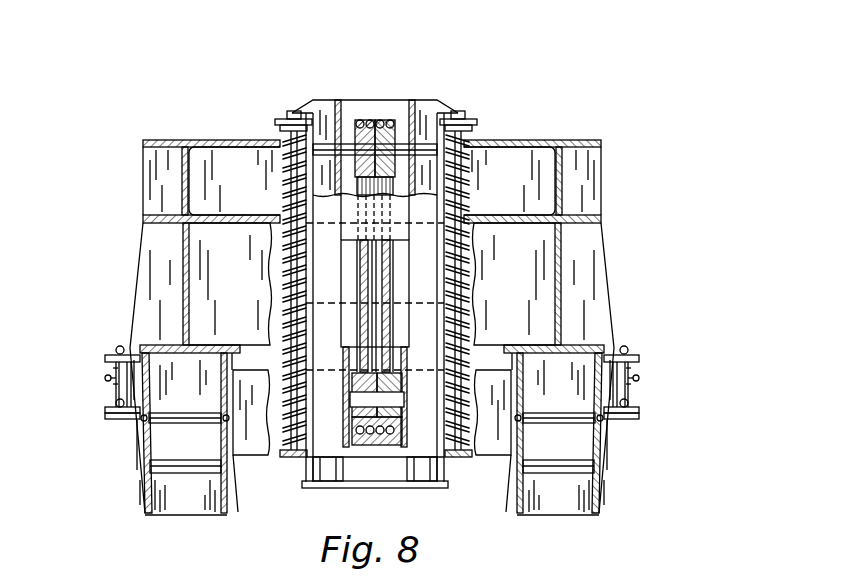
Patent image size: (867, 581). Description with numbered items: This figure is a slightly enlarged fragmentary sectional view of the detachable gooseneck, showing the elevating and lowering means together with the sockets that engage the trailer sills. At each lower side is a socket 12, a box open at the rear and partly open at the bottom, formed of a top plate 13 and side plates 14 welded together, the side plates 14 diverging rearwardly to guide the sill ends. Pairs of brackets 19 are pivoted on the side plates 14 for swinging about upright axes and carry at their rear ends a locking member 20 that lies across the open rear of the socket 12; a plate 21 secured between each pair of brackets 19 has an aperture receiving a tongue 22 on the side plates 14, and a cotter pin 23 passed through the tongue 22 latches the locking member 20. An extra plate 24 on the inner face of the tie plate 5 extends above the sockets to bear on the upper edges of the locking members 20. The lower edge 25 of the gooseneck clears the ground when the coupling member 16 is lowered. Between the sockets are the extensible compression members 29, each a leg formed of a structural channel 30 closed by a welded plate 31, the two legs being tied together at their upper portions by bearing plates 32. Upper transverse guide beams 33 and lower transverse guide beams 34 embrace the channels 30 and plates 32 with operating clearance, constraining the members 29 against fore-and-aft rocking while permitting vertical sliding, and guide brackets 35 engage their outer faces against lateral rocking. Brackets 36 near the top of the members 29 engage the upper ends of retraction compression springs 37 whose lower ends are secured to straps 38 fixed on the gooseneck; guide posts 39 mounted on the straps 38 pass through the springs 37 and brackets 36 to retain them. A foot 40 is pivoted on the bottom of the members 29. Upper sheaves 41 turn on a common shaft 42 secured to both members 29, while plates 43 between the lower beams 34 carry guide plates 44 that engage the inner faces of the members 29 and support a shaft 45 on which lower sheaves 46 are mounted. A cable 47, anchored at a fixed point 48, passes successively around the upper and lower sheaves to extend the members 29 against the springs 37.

The tie plate 5 is at (265, 82).
The socket 12 is at (132, 464).
The top plate 13 is at (167, 345).
The side plate 14 is at (137, 436).
The coupling member 16 is at (168, 461).
The bracket 19 is at (104, 352).
The locking member 20 is at (183, 398).
The plate 21 is at (113, 369).
The tongue 22 is at (105, 378).
The cotter pin 23 is at (108, 384).
The extra plate 24 is at (137, 296).
The lower edge of the gooseneck 25 is at (168, 518).
The extensible compression member 29 is at (334, 97).
The structural channel 30 is at (341, 122).
The plate 31 is at (300, 105).
The bearing plate 32 is at (397, 247).
The upper transverse guide beam 33 is at (181, 262).
The lower transverse guide beam 34 is at (256, 448).
The guide bracket 35 is at (306, 262).
The bracket 36 is at (285, 121).
The retraction compression spring 37 is at (276, 125).
The strap 38 is at (282, 458).
The guide post 39 is at (284, 204).
The foot 40 is at (343, 489).
The upper sheave 41 is at (397, 127).
The shaft 42 is at (422, 145).
The plate 43 is at (400, 456).
The guide plate 44 is at (352, 394).
The shaft 45 is at (379, 406).
The lower sheave 46 is at (404, 370).
The cable 47 is at (384, 118).
The cable anchor 48 is at (347, 357).